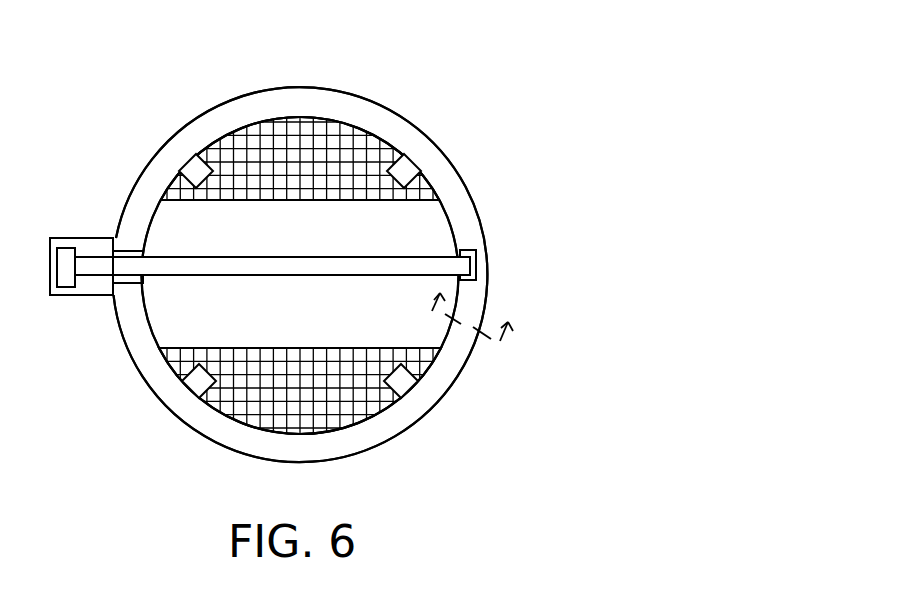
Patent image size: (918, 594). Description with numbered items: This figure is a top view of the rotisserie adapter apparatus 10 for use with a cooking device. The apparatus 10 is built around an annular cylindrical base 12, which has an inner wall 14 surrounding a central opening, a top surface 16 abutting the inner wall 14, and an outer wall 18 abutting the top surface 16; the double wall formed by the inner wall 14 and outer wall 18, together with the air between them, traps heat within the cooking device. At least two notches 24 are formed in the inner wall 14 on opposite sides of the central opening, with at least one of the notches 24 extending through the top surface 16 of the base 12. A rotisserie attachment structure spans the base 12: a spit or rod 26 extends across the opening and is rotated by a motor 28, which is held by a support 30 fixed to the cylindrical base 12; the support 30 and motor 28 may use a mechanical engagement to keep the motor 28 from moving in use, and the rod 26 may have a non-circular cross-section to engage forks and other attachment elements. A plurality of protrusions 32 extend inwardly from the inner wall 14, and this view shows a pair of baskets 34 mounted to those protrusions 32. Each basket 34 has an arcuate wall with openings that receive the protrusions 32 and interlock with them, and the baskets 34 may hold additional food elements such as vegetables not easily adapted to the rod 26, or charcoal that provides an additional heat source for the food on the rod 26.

The rotisserie adapter apparatus 10 is at (463, 105).
The annular cylindrical base 12 is at (473, 192).
The inner wall 14 is at (155, 333).
The top surface 16 is at (455, 355).
The outer wall 18 is at (490, 268).
The notches 24 is at (133, 251).
The rod 26 is at (295, 256).
The motor 28 is at (77, 297).
The support 30 is at (67, 297).
The protrusions 32 is at (205, 150).
The baskets 34 is at (318, 147).